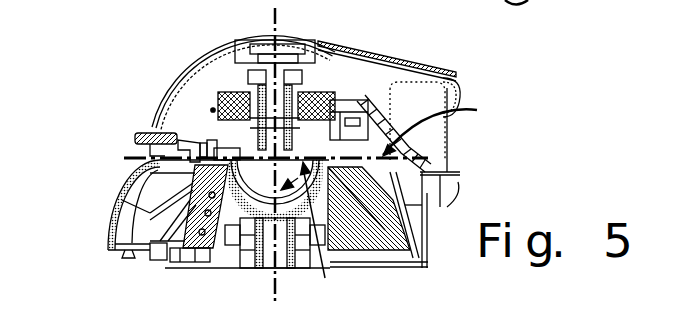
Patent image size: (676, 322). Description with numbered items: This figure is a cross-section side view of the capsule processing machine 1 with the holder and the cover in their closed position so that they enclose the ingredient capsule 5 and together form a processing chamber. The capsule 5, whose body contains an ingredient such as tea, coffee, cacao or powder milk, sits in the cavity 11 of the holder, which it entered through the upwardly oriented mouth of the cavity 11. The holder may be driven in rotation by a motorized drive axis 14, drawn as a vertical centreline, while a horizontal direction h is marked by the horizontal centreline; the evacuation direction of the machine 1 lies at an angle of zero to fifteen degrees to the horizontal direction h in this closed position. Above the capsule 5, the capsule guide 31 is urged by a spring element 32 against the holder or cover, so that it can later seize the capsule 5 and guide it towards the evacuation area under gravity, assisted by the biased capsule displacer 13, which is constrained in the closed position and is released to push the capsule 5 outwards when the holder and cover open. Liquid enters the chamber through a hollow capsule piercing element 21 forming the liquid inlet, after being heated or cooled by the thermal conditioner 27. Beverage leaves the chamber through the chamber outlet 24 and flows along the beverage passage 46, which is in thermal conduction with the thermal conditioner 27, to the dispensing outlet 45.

The capsule processing machine 1 is at (394, 190).
The ingredient capsule 5 is at (224, 156).
The cavity 11 is at (250, 205).
The capsule displacer 13 is at (256, 175).
The motorized drive axis 14 is at (278, 26).
The hollow capsule piercing element 21 is at (276, 157).
The chamber outlet 24 is at (230, 157).
The thermal conditioner 27 is at (370, 235).
The capsule guide 31 is at (128, 157).
The spring element 32 is at (212, 108).
The dispensing outlet 45 is at (127, 249).
The beverage passage 46 is at (200, 192).
The horizontal direction h is at (138, 161).